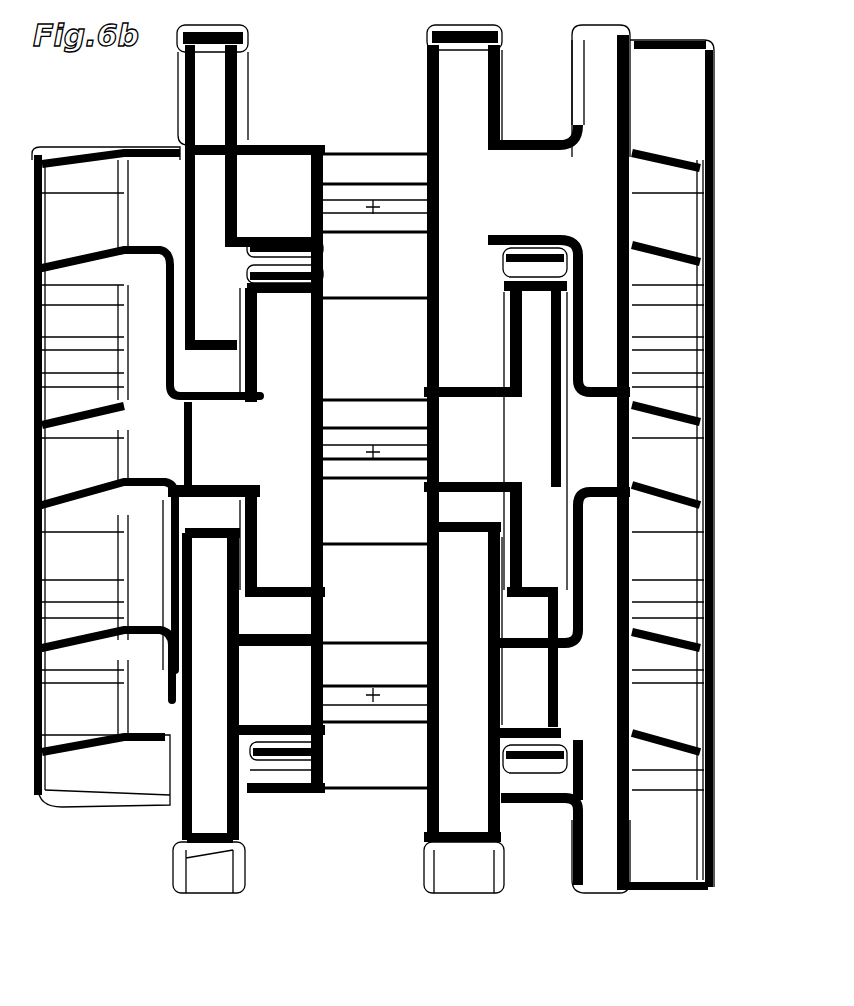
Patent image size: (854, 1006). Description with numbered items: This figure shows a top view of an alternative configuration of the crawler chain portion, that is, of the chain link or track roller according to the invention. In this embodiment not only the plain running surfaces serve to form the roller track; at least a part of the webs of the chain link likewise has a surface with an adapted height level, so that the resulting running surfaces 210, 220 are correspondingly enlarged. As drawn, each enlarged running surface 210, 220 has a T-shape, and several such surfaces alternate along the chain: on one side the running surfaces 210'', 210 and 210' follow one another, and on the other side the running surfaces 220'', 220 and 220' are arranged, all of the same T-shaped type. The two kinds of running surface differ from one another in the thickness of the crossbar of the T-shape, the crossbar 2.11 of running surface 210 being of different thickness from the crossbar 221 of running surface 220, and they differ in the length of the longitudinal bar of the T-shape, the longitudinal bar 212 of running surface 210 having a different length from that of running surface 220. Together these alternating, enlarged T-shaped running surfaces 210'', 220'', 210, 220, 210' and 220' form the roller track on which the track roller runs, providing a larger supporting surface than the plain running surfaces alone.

The running surface 210'' is at (199, 187).
The running surface 220'' is at (505, 162).
The crossbar 221 is at (293, 353).
The crossbar 2.11 is at (541, 373).
The running surface 220 is at (229, 442).
The longitudinal bar 212 is at (216, 478).
The running surface 210 is at (534, 483).
The running surface 210' is at (256, 721).
The running surface 220' is at (529, 746).